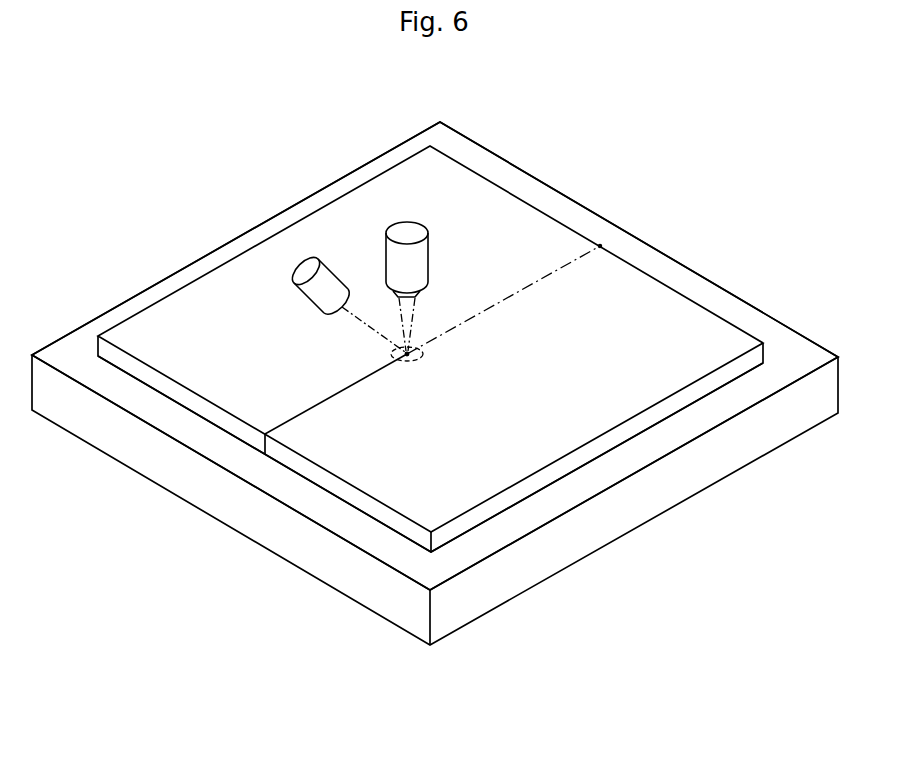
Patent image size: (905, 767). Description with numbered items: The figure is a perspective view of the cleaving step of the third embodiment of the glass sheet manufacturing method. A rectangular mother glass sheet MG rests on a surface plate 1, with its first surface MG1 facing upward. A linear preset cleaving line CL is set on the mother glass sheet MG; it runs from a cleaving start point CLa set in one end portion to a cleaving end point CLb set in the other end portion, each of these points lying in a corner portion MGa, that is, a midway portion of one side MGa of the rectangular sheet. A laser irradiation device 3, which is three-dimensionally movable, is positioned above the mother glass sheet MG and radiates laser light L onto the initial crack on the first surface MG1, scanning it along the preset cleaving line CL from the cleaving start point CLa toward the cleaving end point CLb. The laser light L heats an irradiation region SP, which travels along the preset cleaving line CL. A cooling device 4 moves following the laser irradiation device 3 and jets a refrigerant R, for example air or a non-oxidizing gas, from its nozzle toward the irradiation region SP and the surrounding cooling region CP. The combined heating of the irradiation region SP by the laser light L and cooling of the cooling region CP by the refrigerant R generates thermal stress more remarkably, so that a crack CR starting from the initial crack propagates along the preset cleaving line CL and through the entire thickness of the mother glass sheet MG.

The surface plate 1 is at (685, 473).
The mother glass sheet MG is at (665, 280).
The corner portion of the mother glass sheet MGa is at (472, 168).
The first surface MG1 is at (212, 298).
The cleaving start point CLa is at (266, 437).
The cleaving end point CLb is at (600, 243).
The crack CR is at (323, 397).
The preset cleaving line CL is at (515, 288).
The irradiation region SP is at (408, 357).
The cooling region CP is at (424, 354).
The laser irradiation device 3 is at (406, 232).
The cooling device 4 is at (331, 275).
The laser light L is at (413, 322).
The refrigerant R is at (372, 318).